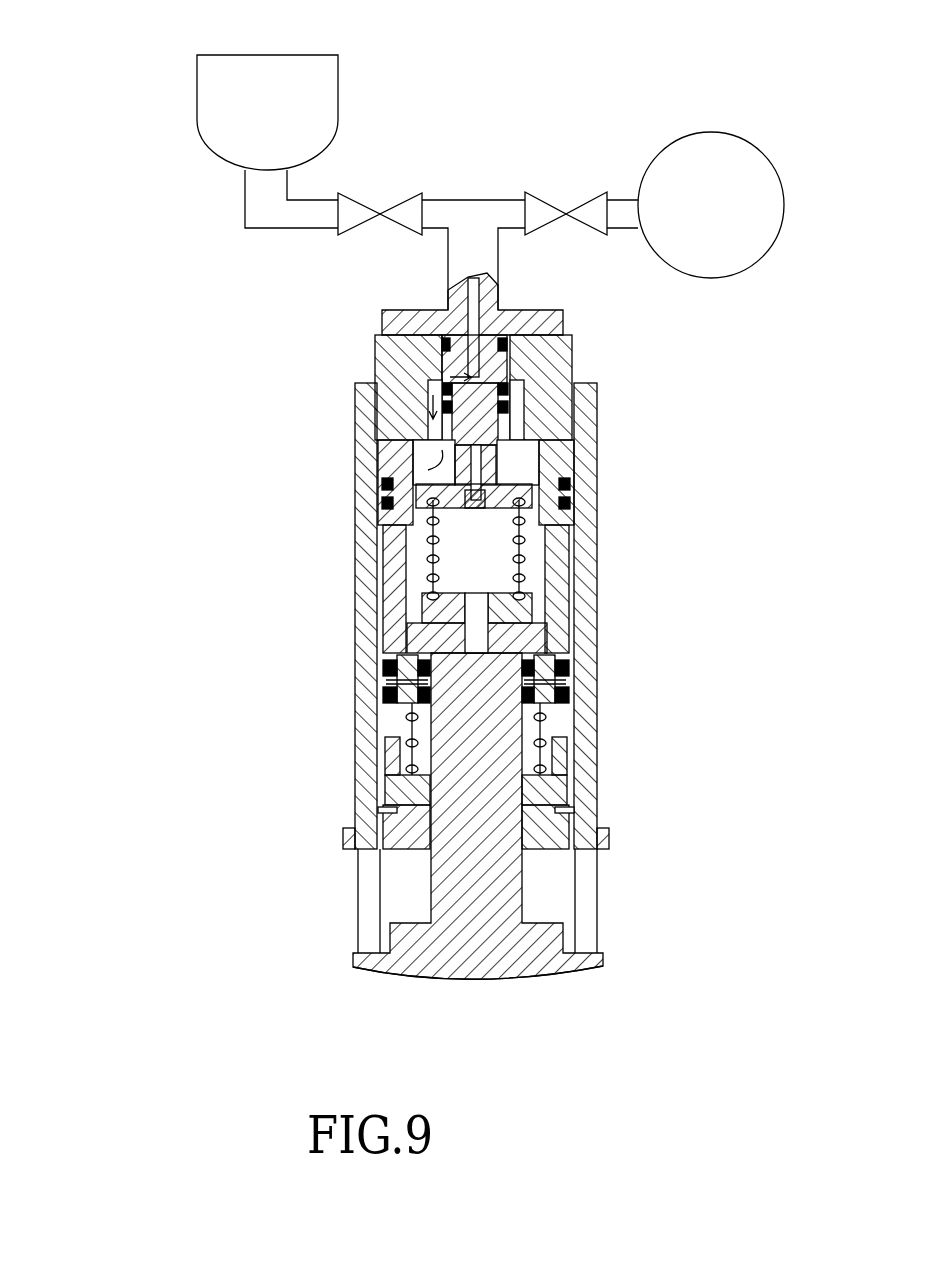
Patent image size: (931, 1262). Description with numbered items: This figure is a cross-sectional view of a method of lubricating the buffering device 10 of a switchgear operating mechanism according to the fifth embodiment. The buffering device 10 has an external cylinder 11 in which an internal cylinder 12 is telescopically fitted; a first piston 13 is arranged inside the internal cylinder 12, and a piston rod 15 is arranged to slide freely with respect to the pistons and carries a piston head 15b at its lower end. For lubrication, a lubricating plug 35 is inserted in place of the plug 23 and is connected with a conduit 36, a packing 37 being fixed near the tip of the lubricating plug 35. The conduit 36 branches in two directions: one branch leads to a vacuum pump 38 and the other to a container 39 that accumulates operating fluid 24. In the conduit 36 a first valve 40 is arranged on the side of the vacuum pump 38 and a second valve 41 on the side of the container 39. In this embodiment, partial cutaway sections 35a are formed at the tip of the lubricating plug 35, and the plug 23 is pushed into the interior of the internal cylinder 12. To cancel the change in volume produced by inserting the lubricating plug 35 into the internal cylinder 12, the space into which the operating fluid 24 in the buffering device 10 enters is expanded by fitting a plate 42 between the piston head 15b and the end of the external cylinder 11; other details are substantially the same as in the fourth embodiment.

The buffering device 10 is at (120, 581).
The external cylinder 11 is at (595, 688).
The internal cylinder 12 is at (550, 586).
The first piston 13 is at (400, 640).
The piston rod 15 is at (462, 832).
The piston head 15b is at (407, 970).
The plug 23 is at (488, 462).
The operating fluid 24 is at (437, 403).
The lubricating plug 35 is at (405, 308).
The partial cutaway sections 35a is at (458, 365).
The conduit 36 is at (487, 210).
The packing 37 is at (443, 337).
The vacuum pump 38 is at (725, 278).
The container 39 is at (215, 127).
The first valve 40 is at (600, 198).
The second valve 41 is at (365, 210).
The plate 42 is at (368, 888).